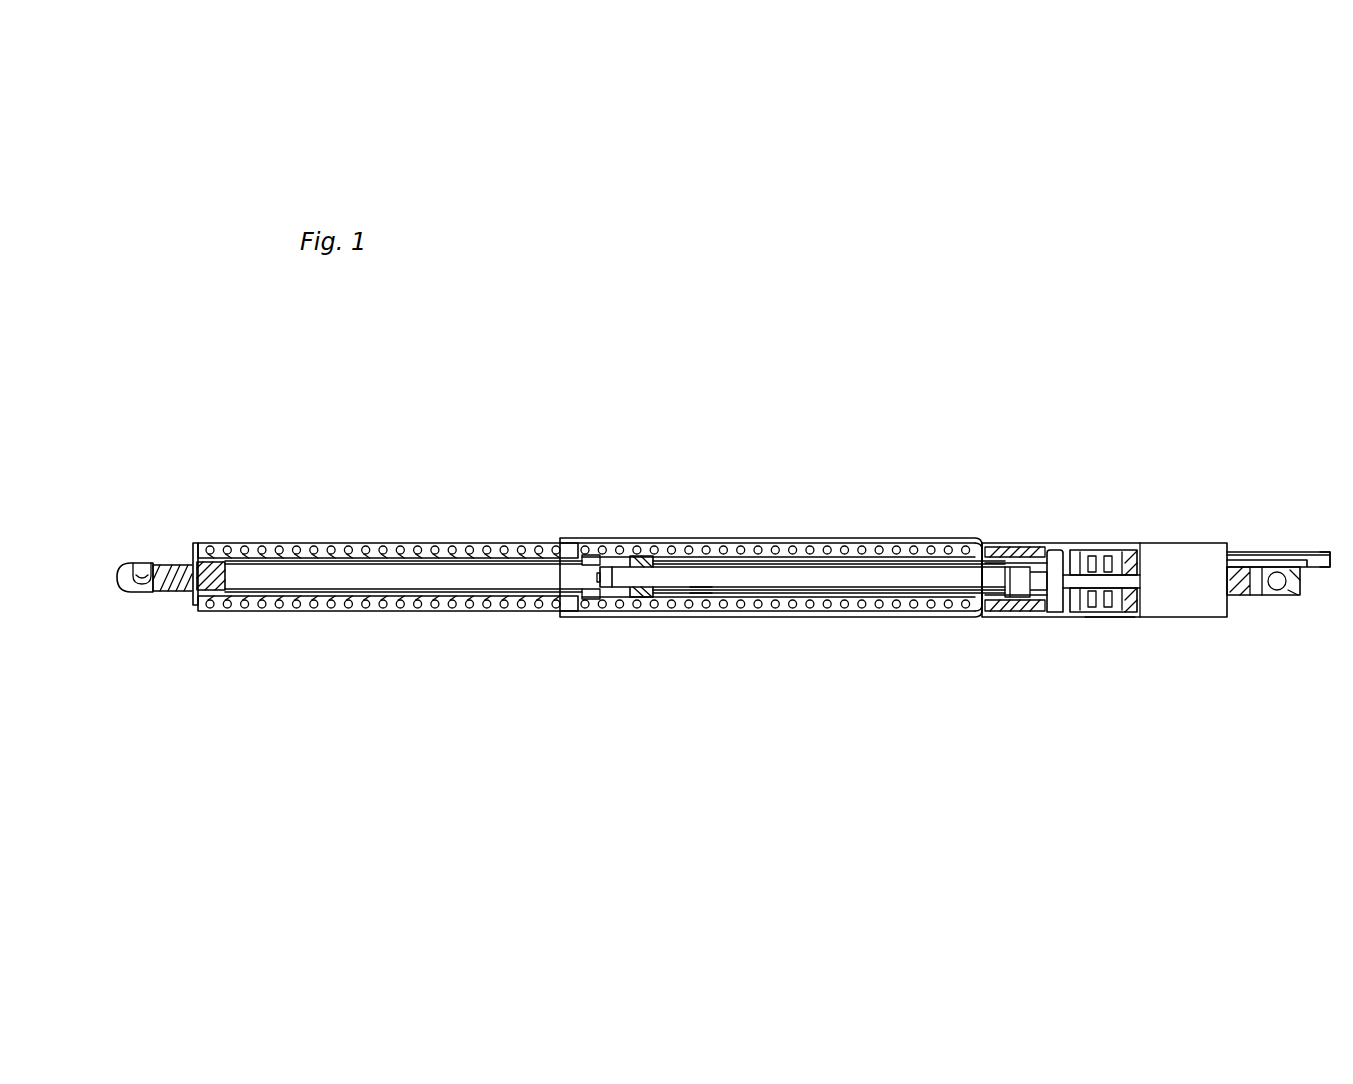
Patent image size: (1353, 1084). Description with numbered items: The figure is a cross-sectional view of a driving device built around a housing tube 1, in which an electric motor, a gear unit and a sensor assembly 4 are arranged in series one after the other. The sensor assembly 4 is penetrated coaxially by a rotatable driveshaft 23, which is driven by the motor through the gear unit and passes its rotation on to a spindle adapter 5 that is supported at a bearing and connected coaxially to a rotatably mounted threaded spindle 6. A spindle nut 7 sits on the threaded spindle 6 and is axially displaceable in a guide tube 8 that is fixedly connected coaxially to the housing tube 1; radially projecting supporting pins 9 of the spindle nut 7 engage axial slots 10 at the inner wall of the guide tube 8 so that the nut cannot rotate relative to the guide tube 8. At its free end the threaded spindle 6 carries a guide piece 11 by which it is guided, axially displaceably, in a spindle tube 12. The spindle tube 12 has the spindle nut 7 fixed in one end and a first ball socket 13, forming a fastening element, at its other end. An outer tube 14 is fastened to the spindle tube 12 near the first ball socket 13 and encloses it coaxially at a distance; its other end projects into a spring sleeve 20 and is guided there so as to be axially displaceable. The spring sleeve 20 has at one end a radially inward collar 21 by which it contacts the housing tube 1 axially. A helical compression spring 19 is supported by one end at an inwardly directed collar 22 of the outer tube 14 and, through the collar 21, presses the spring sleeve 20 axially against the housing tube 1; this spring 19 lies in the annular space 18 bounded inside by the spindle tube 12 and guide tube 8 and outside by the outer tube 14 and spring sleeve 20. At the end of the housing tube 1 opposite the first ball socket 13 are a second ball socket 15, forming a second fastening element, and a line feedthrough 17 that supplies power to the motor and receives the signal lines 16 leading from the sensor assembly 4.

The housing tube 1 is at (1020, 545).
The sensor assembly 4 is at (1105, 630).
The spindle adapter 5 is at (1055, 585).
The threaded spindle 6 is at (750, 578).
The spindle nut 7 is at (635, 597).
The guide tube 8 is at (699, 594).
The supporting pins 9 is at (641, 555).
The axial slots 10 is at (779, 560).
The guide piece 11 is at (606, 566).
The spindle tube 12 is at (382, 594).
The first ball socket 13 is at (141, 593).
The outer tube 14 is at (295, 613).
The second ball socket 15 is at (1292, 597).
The signal lines 16 is at (1247, 553).
The line feedthrough 17 is at (1294, 546).
The annular space 18 is at (430, 553).
The helical compression spring 19 is at (387, 555).
The spring sleeve 20 is at (866, 617).
The collar 21 is at (982, 542).
The collar 22 is at (194, 608).
The driveshaft 23 is at (1097, 575).